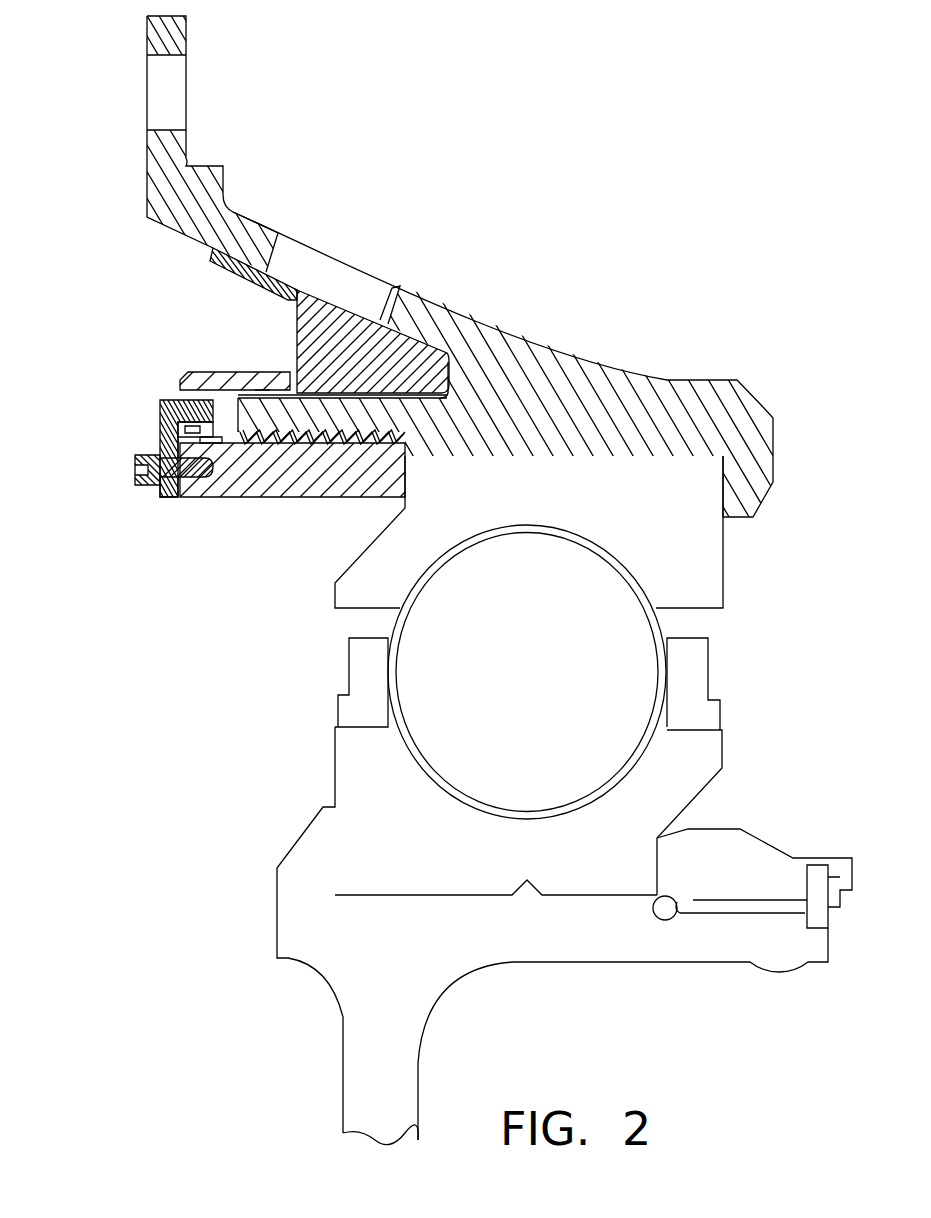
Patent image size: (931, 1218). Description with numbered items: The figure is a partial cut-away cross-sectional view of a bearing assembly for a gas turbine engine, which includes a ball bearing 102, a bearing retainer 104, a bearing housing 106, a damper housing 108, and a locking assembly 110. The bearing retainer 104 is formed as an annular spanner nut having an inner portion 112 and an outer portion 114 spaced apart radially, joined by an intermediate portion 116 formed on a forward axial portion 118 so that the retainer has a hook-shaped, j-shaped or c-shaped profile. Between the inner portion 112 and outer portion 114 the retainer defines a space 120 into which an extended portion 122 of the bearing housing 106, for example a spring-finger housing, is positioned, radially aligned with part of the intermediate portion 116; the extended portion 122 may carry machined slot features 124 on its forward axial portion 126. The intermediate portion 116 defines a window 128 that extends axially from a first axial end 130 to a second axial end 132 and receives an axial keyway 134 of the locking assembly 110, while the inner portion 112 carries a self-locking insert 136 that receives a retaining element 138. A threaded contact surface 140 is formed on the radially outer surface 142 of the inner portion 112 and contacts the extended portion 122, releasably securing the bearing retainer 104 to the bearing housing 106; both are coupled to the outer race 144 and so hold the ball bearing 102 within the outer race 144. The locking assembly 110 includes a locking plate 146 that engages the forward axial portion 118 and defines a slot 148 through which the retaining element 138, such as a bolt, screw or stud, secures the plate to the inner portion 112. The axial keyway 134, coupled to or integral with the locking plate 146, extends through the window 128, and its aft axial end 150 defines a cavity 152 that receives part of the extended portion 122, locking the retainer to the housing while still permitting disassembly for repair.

The ball bearing 102 is at (552, 681).
The bearing retainer 104 is at (277, 607).
The bearing housing 106 is at (450, 320).
The damper housing 108 is at (295, 305).
The locking assembly 110 is at (125, 588).
The inner portion 112 is at (375, 495).
The outer portion 114 is at (282, 397).
The intermediate portion 116 is at (178, 383).
The forward axial portion 118 is at (210, 497).
The space 120 is at (262, 397).
The extended portion 122 is at (353, 415).
The machined slot features 124 is at (201, 398).
The forward axial portion 126 is at (213, 398).
The window 128 is at (162, 402).
The first axial end 130 is at (160, 452).
The second axial end 132 is at (222, 440).
The axial keyway 134 is at (163, 432).
The self-locking insert 136 is at (215, 478).
The retaining element 138 is at (137, 474).
The threaded contact surface 140 is at (385, 478).
The radially outer surface 142 is at (406, 457).
The outer race 144 is at (667, 527).
The locking plate 146 is at (161, 480).
The slot 148 is at (170, 497).
The aft axial end 150 is at (187, 373).
The cavity 152 is at (285, 440).